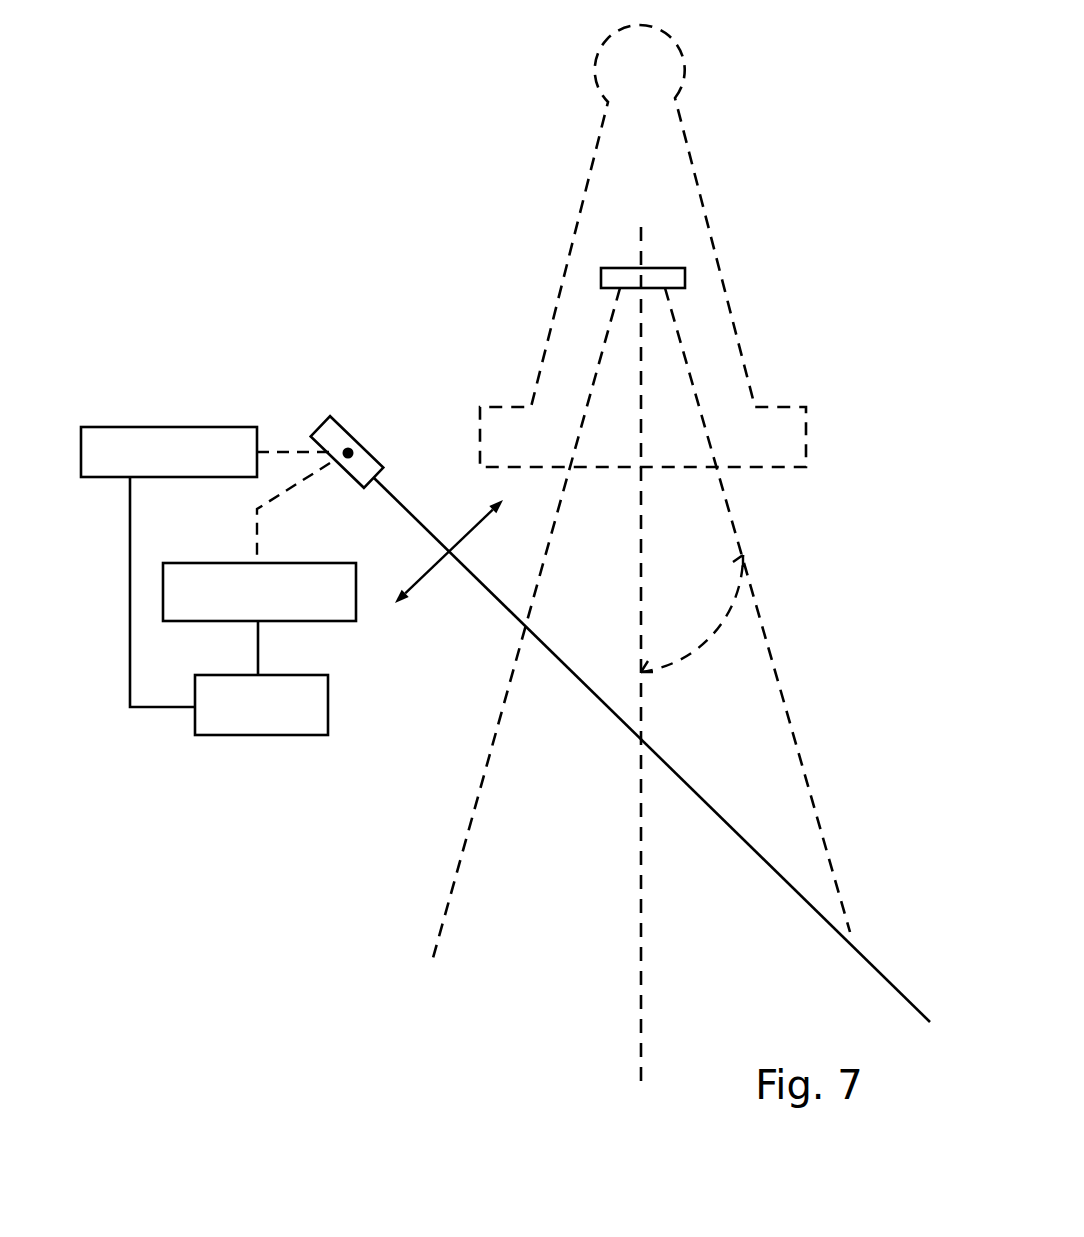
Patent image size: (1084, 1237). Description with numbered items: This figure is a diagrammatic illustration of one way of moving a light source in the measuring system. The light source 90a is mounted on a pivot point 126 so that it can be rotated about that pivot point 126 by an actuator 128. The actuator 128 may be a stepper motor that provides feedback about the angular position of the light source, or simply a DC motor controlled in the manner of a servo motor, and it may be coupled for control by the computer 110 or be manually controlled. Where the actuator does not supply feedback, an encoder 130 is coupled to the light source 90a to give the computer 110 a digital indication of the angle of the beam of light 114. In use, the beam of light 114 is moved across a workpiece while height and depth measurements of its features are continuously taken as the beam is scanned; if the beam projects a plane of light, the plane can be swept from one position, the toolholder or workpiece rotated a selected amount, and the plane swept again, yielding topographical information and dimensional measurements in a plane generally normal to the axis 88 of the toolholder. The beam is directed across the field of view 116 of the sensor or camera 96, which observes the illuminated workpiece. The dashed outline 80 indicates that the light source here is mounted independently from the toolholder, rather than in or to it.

The patient 80 is at (753, 169).
The sensor or camera 96 is at (687, 279).
The field of view 116 is at (748, 553).
The axis of the toolholder 88 is at (694, 613).
The light source 90a is at (347, 427).
The pivot point 126 is at (358, 452).
The beam of light 114 is at (627, 722).
The encoder 130 is at (221, 427).
The actuator 128 is at (297, 563).
The computer 110 is at (305, 735).